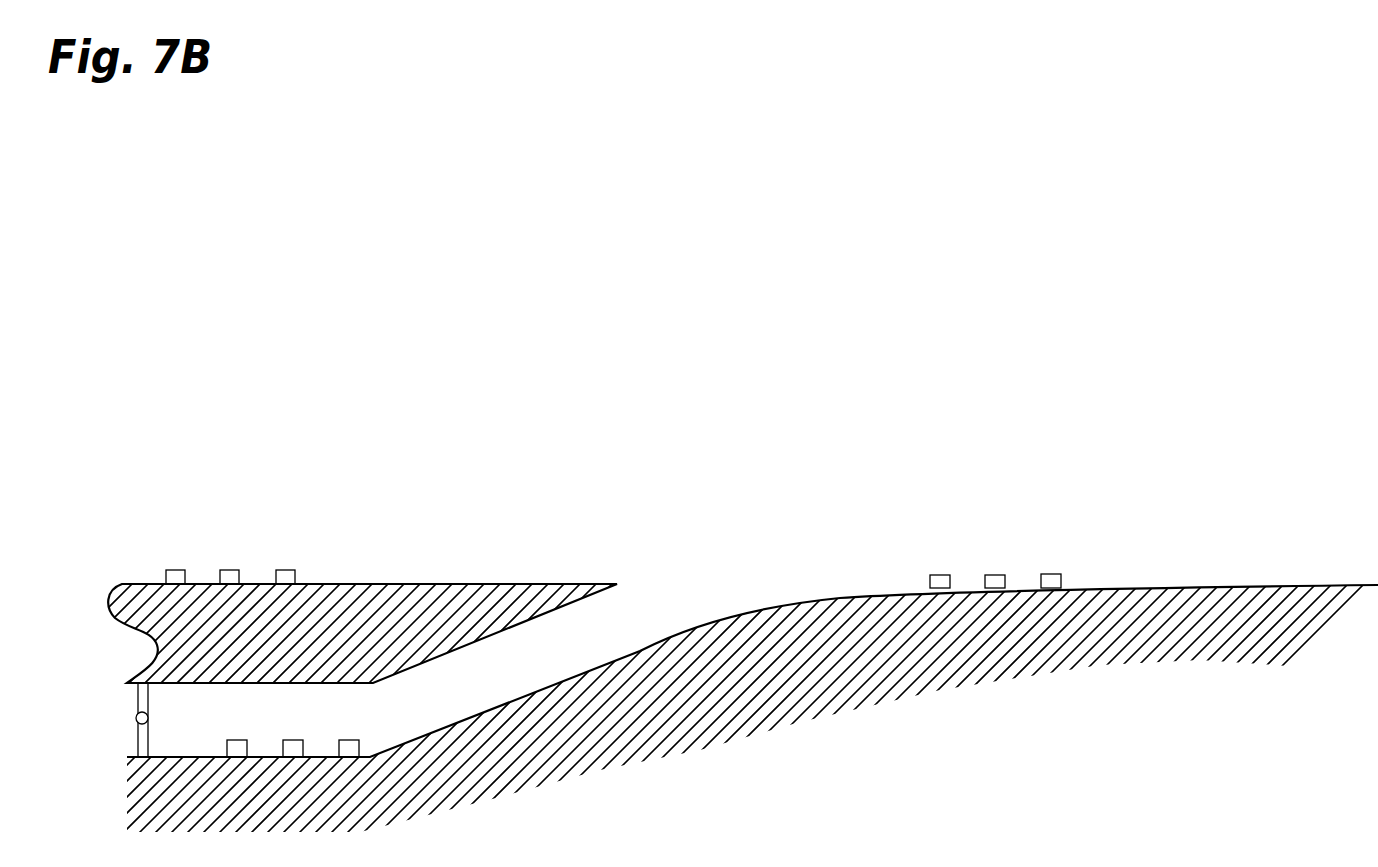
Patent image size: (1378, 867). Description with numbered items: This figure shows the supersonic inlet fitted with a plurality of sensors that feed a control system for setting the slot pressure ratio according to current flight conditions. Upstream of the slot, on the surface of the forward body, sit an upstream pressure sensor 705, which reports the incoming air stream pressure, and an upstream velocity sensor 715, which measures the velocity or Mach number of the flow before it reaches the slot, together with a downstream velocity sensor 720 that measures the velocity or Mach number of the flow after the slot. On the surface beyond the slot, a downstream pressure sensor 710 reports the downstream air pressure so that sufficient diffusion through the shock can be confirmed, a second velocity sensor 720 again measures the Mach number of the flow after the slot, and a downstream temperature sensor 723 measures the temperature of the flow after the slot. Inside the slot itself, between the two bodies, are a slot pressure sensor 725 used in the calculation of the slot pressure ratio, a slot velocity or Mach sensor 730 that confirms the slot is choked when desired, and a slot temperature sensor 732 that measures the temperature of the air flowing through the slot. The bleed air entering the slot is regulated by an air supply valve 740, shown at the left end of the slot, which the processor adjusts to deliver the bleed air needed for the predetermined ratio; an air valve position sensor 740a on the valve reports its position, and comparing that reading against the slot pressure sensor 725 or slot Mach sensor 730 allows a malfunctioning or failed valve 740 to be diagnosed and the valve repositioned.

The upstream pressure sensor 705 is at (174, 570).
The upstream velocity sensor 715 is at (229, 570).
The downstream velocity sensor 720 is at (287, 570).
The downstream pressure sensor 710 is at (938, 575).
The downstream temperature sensor 723 is at (1052, 574).
The slot pressure sensor 725 is at (237, 740).
The slot velocity or Mach sensor 730 is at (291, 740).
The slot temperature sensor 732 is at (349, 740).
The air supply valve 740 is at (90, 720).
The air valve position sensor 740a is at (136, 720).